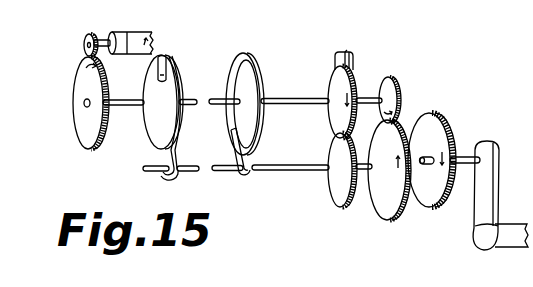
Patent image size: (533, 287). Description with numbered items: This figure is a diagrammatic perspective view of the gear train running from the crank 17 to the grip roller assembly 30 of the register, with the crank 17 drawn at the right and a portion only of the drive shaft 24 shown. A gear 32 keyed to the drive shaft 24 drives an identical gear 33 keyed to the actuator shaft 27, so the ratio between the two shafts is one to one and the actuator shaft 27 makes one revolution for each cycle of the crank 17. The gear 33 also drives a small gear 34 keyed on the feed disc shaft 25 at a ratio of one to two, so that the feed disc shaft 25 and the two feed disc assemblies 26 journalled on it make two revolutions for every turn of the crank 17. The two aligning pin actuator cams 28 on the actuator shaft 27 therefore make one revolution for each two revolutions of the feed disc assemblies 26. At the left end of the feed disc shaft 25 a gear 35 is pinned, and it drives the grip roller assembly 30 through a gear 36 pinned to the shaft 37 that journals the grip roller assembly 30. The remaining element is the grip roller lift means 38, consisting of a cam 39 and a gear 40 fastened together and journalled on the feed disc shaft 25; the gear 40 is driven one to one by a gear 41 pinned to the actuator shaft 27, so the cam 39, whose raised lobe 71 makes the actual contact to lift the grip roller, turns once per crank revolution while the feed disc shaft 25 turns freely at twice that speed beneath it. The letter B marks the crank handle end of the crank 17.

The crank 17 is at (491, 190).
The drive shaft 24 is at (472, 157).
The feed disc shaft 25 is at (296, 99).
The feed disc assemblies 26 is at (184, 82).
The actuator shaft 27 is at (310, 150).
The aligning pin actuator cams 28 is at (185, 159).
The grip roller assembly 30 is at (139, 32).
The gear 32 is at (446, 126).
The gear 33 is at (396, 208).
The small gear 34 is at (396, 84).
The gear 35 is at (81, 137).
The gear 36 is at (83, 47).
The shaft 37 is at (100, 33).
The grip roller lift means 38 is at (351, 55).
The cam 39 is at (341, 53).
The gear 40 is at (357, 75).
The gear 41 is at (338, 204).
The raised lobe 71 is at (347, 52).
The handle B is at (514, 221).